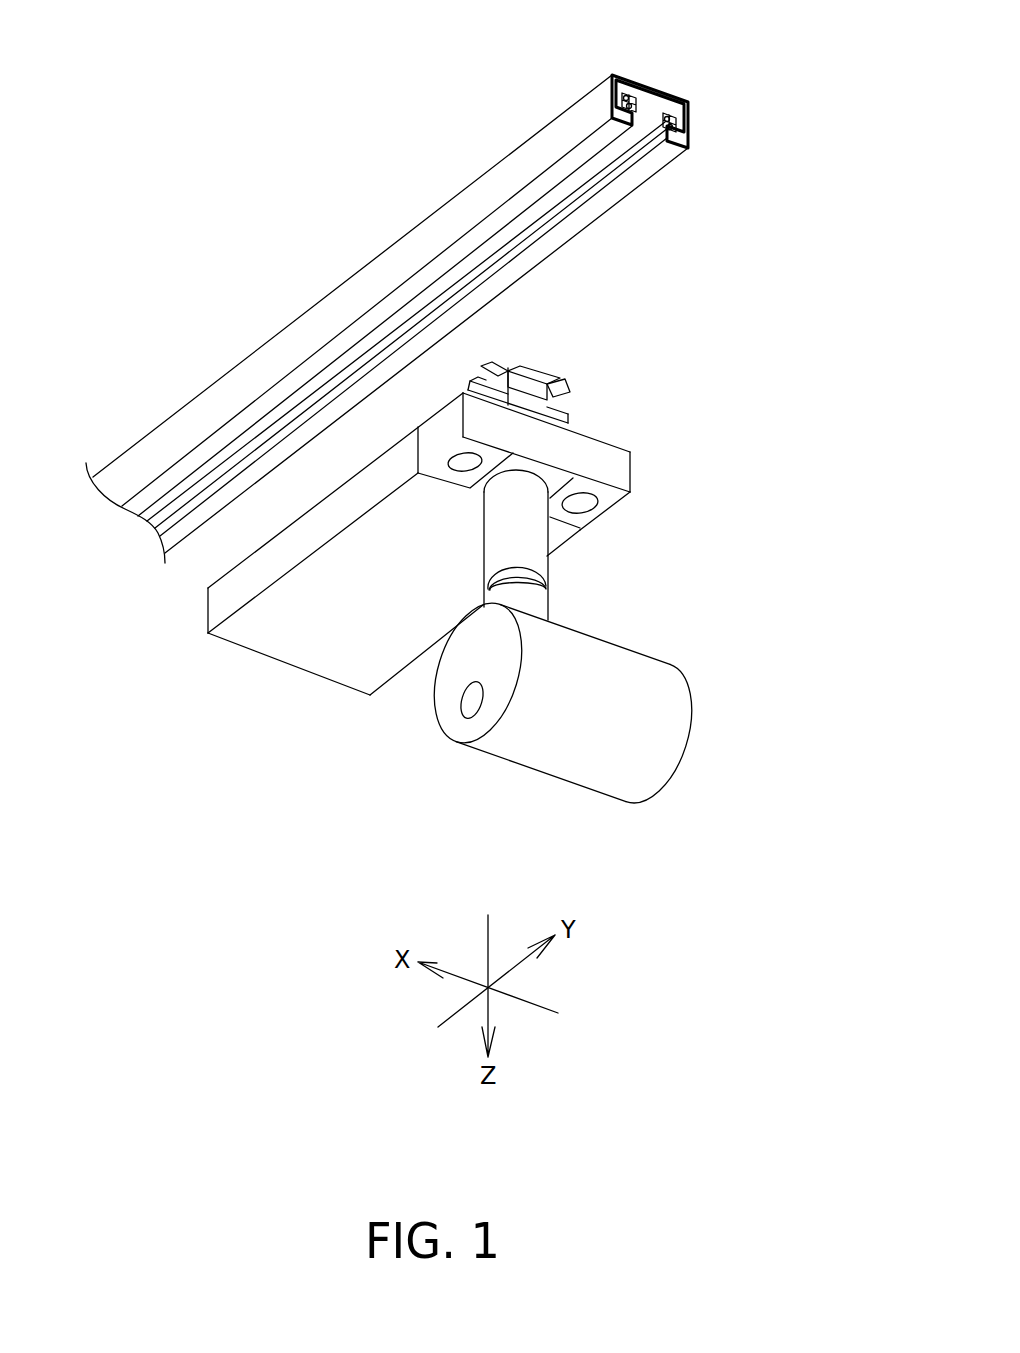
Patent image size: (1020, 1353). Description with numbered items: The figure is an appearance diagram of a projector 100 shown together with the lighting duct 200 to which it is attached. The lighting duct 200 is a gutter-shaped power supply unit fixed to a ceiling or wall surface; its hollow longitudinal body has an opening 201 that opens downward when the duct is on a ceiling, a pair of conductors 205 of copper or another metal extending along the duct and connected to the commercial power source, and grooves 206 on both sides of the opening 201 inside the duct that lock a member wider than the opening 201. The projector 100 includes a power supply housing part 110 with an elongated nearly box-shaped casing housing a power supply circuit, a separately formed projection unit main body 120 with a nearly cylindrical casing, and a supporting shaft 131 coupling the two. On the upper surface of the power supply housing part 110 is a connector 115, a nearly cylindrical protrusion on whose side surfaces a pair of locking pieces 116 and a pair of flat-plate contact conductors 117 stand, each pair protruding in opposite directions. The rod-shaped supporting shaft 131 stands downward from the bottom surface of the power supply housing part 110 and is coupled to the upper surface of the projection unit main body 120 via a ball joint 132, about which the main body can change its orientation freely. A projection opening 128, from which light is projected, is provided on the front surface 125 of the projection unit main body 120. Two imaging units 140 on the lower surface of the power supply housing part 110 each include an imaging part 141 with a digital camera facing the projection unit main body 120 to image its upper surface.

The projector 100 is at (693, 441).
The power supply housing part 110 is at (326, 653).
The connector 115 is at (529, 377).
The locking pieces 116 is at (482, 394).
The contact conductors 117 is at (493, 357).
The projection unit main body 120 is at (568, 760).
The front surface 125 is at (475, 628).
The projection opening 128 is at (457, 729).
The supporting shaft 131 is at (533, 542).
The ball joint 132 is at (550, 580).
The imaging unit 140 is at (440, 465).
The imaging part 141 is at (458, 463).
The lighting duct 200 is at (318, 300).
The opening 201 is at (605, 181).
The conductors 205 is at (633, 107).
The grooves 206 is at (608, 115).